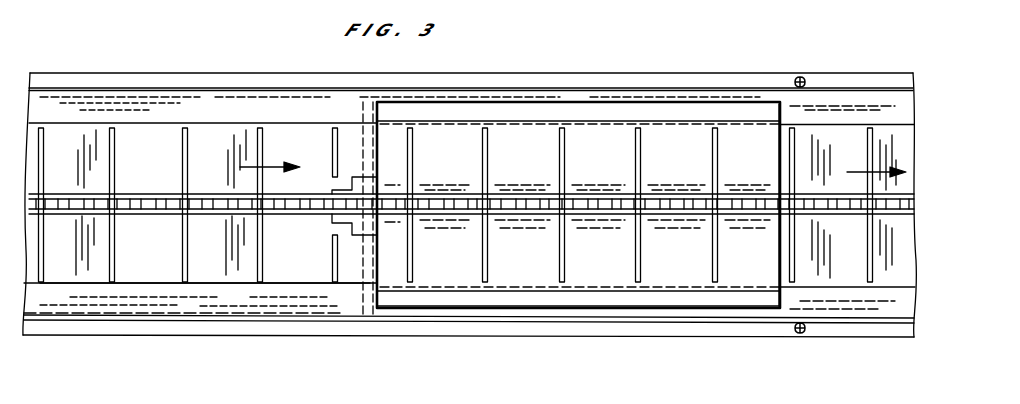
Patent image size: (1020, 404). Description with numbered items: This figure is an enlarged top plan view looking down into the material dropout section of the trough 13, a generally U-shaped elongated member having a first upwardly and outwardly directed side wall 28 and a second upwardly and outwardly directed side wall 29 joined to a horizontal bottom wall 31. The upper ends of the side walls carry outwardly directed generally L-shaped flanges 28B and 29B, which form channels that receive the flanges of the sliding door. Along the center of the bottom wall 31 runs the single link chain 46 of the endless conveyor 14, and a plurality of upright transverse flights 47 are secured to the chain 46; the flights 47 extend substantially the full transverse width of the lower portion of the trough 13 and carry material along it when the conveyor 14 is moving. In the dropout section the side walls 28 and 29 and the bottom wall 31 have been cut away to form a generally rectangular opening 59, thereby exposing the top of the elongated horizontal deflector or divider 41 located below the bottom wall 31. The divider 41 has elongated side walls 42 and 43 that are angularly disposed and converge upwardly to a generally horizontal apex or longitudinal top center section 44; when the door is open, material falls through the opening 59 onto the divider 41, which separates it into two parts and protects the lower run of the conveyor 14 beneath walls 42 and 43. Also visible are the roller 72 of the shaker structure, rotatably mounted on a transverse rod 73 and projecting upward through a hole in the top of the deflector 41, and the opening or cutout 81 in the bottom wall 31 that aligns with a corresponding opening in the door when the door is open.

The trough 13 is at (220, 312).
The endless conveyor 14 is at (150, 278).
The first side wall 28 is at (282, 305).
The L-shaped flange 28B is at (583, 333).
The second side wall 29 is at (230, 105).
The L-shaped flange 29B is at (622, 82).
The bottom wall 31 is at (77, 145).
The deflector or divider 41 is at (513, 128).
The side wall of deflector 42 is at (687, 277).
The side wall of deflector 43 is at (738, 135).
The apex or longitudinal top center section 44 is at (668, 192).
The link chain 46 is at (153, 193).
The transverse flights 47 is at (188, 180).
The opening 59 is at (453, 297).
The roller 72 is at (370, 212).
The transverse rod 73 is at (362, 110).
The opening or cutout 81 is at (353, 175).